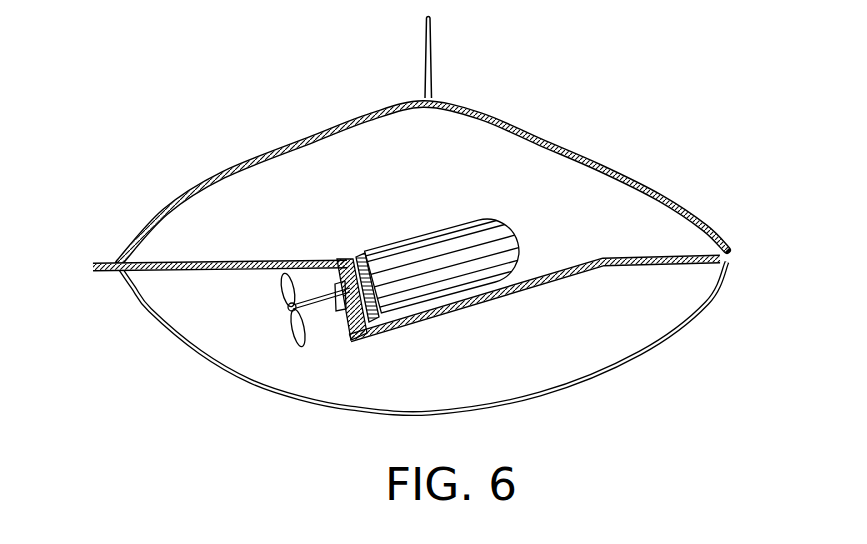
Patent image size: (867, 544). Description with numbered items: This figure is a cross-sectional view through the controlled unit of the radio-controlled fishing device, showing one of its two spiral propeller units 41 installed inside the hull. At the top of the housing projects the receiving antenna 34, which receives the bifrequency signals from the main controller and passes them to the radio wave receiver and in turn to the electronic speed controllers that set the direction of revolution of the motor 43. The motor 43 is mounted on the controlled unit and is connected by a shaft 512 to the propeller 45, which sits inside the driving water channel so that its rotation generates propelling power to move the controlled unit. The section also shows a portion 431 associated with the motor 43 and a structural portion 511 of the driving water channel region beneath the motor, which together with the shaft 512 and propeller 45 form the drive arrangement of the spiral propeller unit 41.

The receiving antenna 34 is at (433, 48).
The spiral propeller unit 41 is at (377, 244).
The motor 43 is at (433, 243).
The propeller shaft 431 is at (303, 262).
The propeller 45 is at (255, 258).
The base plate 511 is at (542, 262).
The shaft 512 is at (260, 262).